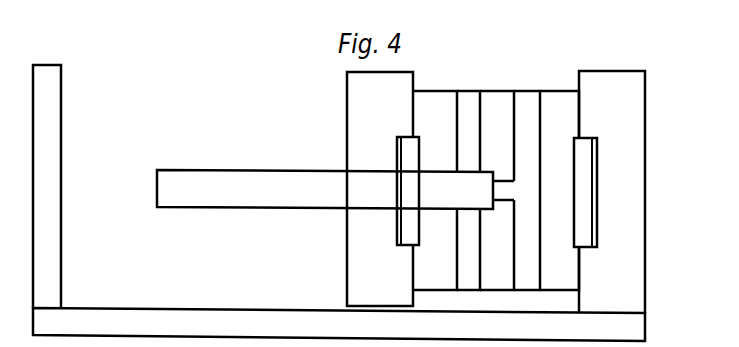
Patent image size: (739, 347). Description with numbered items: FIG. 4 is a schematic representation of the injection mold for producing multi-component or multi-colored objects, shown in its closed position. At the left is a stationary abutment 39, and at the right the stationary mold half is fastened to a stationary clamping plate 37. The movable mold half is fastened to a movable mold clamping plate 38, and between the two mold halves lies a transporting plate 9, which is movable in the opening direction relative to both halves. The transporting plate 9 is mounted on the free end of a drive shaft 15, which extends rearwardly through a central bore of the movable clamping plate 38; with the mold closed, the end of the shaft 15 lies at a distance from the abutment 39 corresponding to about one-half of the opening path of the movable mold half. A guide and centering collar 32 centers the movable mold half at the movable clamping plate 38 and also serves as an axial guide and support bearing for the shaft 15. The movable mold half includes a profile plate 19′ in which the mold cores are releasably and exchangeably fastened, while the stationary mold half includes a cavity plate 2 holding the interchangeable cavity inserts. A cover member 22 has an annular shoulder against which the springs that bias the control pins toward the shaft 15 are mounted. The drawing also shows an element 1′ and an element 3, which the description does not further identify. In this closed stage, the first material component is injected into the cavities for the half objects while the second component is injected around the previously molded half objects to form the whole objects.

The stationary abutment 39 is at (48, 85).
The drive shaft 15 is at (267, 180).
The movable mold clamping plate 38 is at (367, 106).
The guide and centering collar 32 is at (407, 227).
The cover member 22 is at (428, 103).
The profile plate 19′ is at (465, 103).
The transporting plate 9 is at (498, 103).
The cavity plate 2 is at (530, 103).
The end plate 1′ is at (564, 103).
The stationary clamping plate 37 is at (625, 92).
The measuring element 3 is at (583, 165).